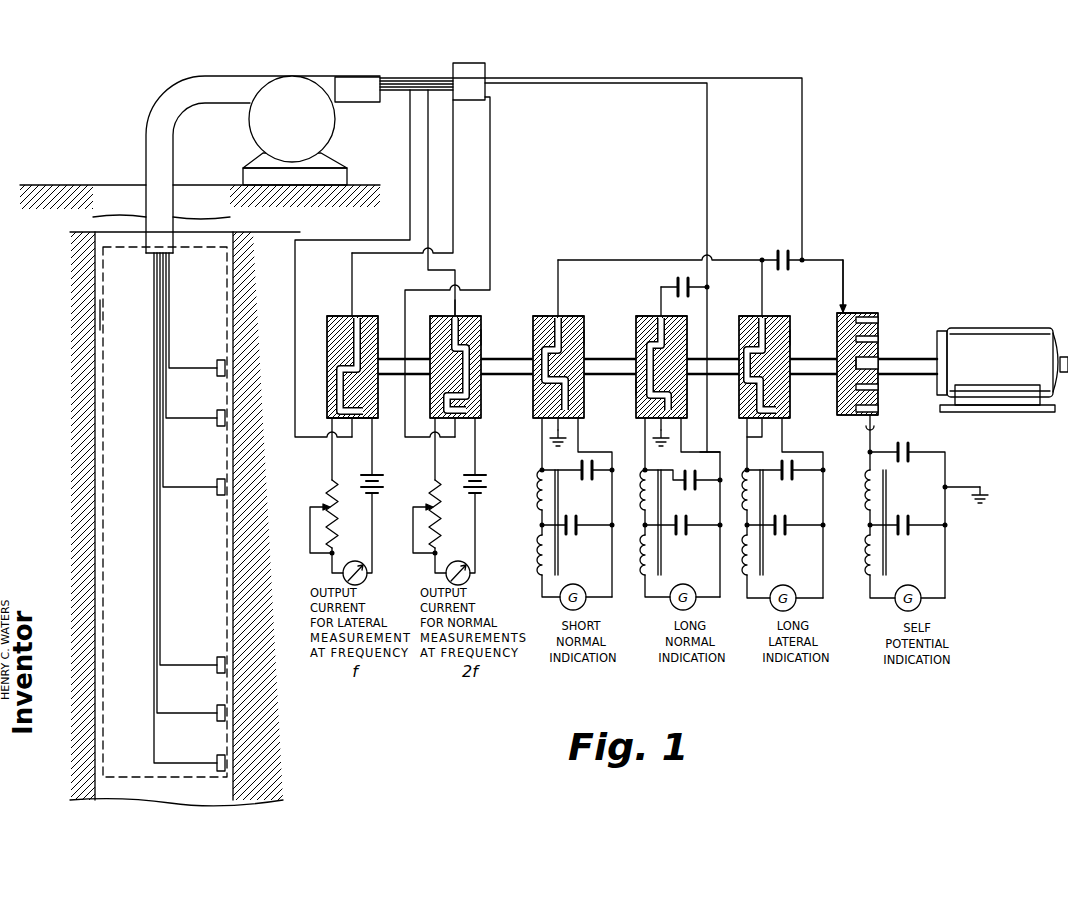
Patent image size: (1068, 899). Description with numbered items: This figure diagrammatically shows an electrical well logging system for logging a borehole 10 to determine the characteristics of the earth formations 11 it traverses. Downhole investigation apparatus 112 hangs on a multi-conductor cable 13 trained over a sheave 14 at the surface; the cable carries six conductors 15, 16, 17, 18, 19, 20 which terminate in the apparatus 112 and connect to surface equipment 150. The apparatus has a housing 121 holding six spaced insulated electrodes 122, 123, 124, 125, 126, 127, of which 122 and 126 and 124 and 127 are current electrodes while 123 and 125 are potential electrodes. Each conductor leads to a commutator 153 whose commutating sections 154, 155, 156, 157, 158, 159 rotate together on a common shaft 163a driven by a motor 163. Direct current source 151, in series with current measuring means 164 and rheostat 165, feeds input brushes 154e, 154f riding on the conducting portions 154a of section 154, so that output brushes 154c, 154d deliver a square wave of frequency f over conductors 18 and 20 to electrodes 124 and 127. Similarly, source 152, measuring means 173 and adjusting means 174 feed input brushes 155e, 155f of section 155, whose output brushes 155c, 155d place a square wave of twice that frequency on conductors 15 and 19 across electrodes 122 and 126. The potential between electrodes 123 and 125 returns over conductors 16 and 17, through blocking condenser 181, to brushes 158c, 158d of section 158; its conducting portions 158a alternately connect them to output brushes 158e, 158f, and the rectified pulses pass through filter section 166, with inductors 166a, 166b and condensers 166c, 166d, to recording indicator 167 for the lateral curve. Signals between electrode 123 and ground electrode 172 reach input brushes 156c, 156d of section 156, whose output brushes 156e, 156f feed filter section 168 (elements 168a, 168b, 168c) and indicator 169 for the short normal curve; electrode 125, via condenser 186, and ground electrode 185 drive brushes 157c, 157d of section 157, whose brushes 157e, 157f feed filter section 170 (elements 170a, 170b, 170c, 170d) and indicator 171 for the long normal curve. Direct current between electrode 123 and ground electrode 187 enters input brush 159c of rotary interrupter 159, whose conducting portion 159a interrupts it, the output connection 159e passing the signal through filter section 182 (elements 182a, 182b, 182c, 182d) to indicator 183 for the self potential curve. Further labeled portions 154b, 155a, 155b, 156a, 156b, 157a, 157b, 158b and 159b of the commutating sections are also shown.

The borehole 10 is at (124, 182).
The earth formations 11 is at (72, 203).
The multi-conductor cable 13 is at (174, 199).
The sheave 14 is at (336, 119).
The electrical conductor 15 is at (472, 63).
The electrical conductor 16 is at (766, 78).
The electrical conductor 17 is at (594, 86).
The electrical conductor 18 is at (454, 140).
The electrical conductor 19 is at (429, 156).
The electrical conductor 20 is at (409, 156).
The investigation apparatus 112 is at (129, 372).
The housing 121 is at (227, 566).
The current electrode 122 is at (217, 762).
The potential electrode 123 is at (217, 712).
The current electrode 124 is at (217, 486).
The potential electrode 125 is at (217, 664).
The current electrode 126 is at (217, 417).
The current electrode 127 is at (217, 366).
The surface equipment 150 is at (865, 195).
The direct current source 151 is at (383, 484).
The direct current source 152 is at (478, 481).
The commutator 153 is at (917, 306).
The commutating section 154 is at (335, 366).
The conducting portions 154a is at (332, 320).
The stator segment 154b is at (327, 362).
The output brush 154c is at (352, 306).
The output brush 154d is at (330, 462).
The input brush 154e is at (332, 440).
The input brush 154f is at (371, 446).
The commutating section 155 is at (461, 376).
The stator segment 155a is at (439, 315).
The stator segment 155b is at (482, 337).
The output brush 155c is at (455, 316).
The output brush 155d is at (434, 462).
The input brush 155e is at (433, 447).
The input brush 155f is at (474, 447).
The commutating section 156 is at (560, 428).
The stator segment 156a is at (554, 314).
The stator segment 156b is at (585, 334).
The input brush 156c is at (575, 312).
The input brush 156d is at (556, 432).
The output brush 156e is at (540, 428).
The output brush 156f is at (580, 432).
The commutating section 157 is at (660, 429).
The stator segment 157a is at (655, 314).
The stator segment 157b is at (639, 390).
The brush 157c is at (662, 314).
The brush 157d is at (700, 455).
The brush 157e is at (641, 426).
The brush 157f is at (682, 440).
The commutating section 158 is at (770, 429).
The conducting portions 158a is at (745, 317).
The stator segment 158b is at (791, 334).
The brush 158c is at (768, 300).
The brush 158d is at (764, 440).
The output brush 158e is at (746, 424).
The output brush 158f is at (787, 425).
The rotary interrupter 159 is at (880, 353).
The conducting portion 159a is at (879, 327).
The stator segment 159b is at (870, 357).
The input brush 159c is at (861, 311).
The stator terminal 159e is at (876, 432).
The motor 163 is at (1025, 328).
The common shaft 163a is at (900, 377).
The current measuring means 164 is at (361, 563).
The power adjusting rheostat 165 is at (339, 513).
The filter section 166 is at (785, 523).
The inductor 166a is at (762, 488).
The inductor 166b is at (768, 545).
The condenser 166c is at (783, 514).
The condenser 166d is at (800, 462).
The recording indicator 167 is at (791, 586).
The filter section 168 is at (554, 531).
The transformer primary winding 168a is at (531, 492).
The transformer secondary winding 168b is at (532, 540).
The capacitor 168c is at (573, 516).
The recording indicator 169 is at (579, 585).
The filter section 170 is at (668, 531).
The transformer primary winding 170a is at (643, 475).
The transformer secondary winding 170b is at (643, 568).
The capacitor 170c is at (684, 517).
The capacitor 170d is at (687, 484).
The recording indicator 171 is at (691, 586).
The ground electrode 172 is at (549, 470).
The current measuring means 173 is at (464, 563).
The power adjusting means 174 is at (442, 513).
The direct current blocking condenser 181 is at (786, 250).
The filter section 182 is at (927, 520).
The transformer primary winding 182a is at (866, 478).
The transformer secondary winding 182b is at (866, 544).
The capacitor 182c is at (911, 516).
The capacitor 182d is at (913, 452).
The recording indicator 183 is at (917, 586).
The ground electrode 185 is at (662, 449).
The blocking condenser 186 is at (683, 275).
The ground electrode 187 is at (992, 494).